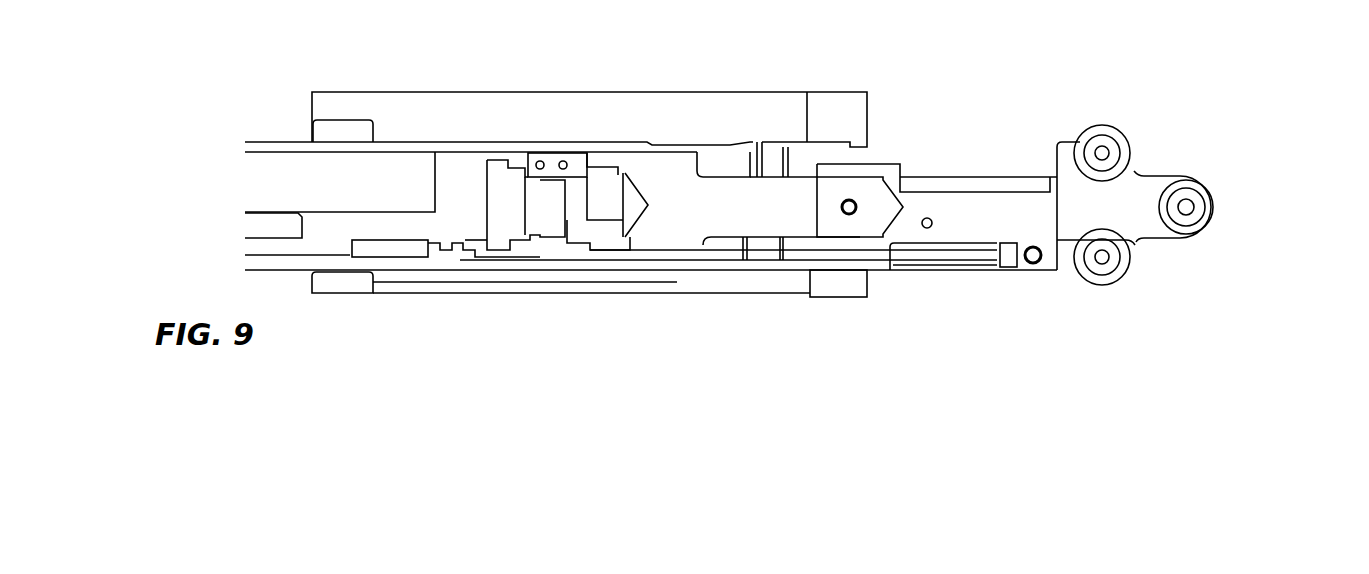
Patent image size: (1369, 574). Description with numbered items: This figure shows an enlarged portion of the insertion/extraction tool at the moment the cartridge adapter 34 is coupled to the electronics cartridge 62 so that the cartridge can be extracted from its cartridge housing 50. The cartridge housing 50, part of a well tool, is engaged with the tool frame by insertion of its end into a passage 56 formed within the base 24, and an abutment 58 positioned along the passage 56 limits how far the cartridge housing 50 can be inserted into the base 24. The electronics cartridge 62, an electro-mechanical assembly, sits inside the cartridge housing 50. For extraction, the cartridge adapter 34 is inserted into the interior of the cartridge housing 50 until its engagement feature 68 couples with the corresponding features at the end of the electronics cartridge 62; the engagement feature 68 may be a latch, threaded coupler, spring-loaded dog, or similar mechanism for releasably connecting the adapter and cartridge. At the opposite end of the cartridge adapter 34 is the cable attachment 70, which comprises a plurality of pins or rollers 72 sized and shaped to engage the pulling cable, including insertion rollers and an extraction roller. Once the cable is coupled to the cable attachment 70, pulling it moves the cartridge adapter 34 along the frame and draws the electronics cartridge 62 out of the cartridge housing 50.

The base 24 is at (413, 93).
The cartridge adapter 34 is at (890, 266).
The cartridge housing 50 is at (287, 140).
The passage 56 is at (460, 153).
The abutment 58 is at (748, 140).
The electronics cartridge 62 is at (263, 172).
The engagement feature 68 is at (634, 258).
The cable attachment 70 is at (1140, 166).
The rollers 72 is at (1097, 145).